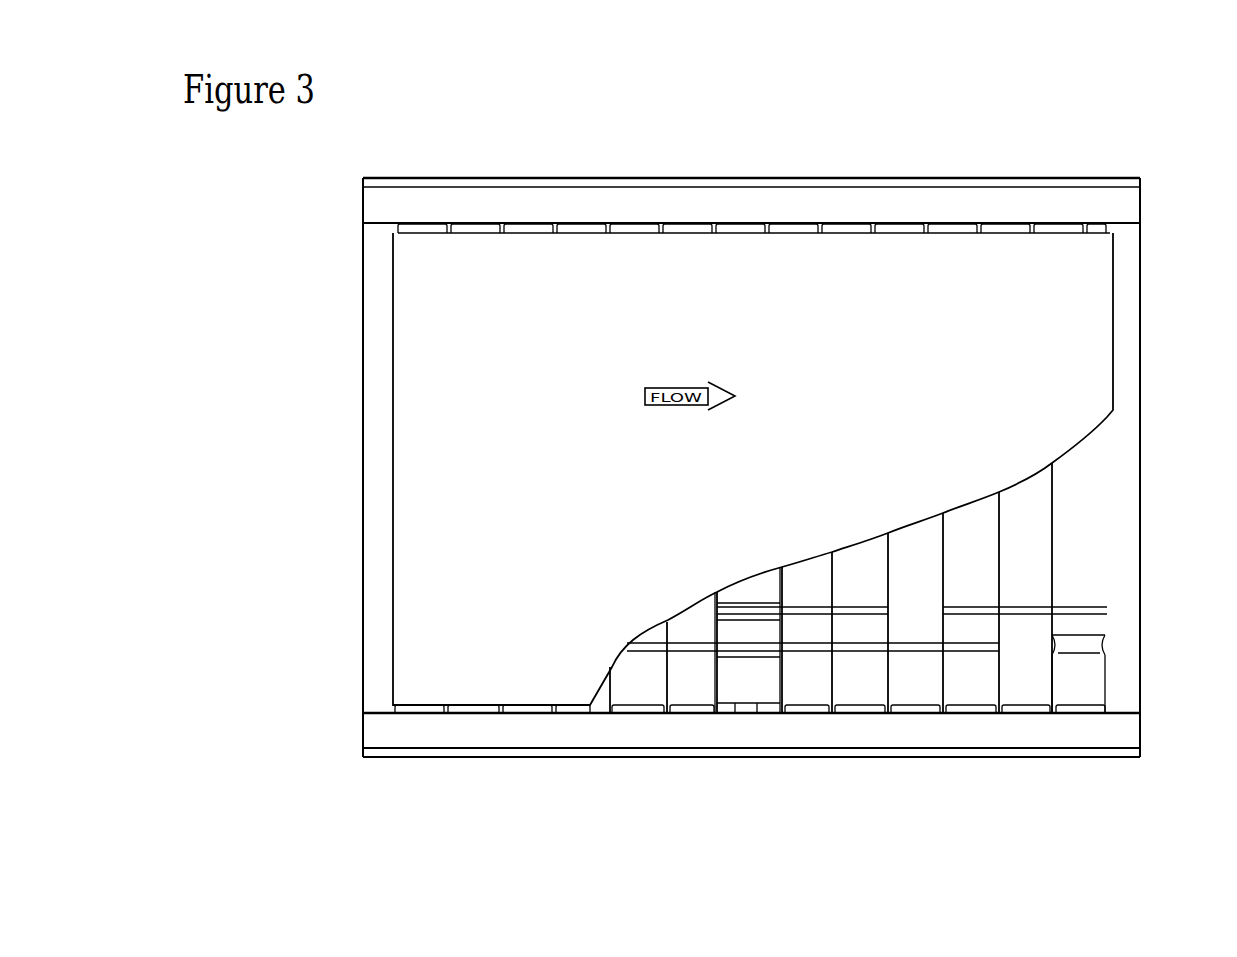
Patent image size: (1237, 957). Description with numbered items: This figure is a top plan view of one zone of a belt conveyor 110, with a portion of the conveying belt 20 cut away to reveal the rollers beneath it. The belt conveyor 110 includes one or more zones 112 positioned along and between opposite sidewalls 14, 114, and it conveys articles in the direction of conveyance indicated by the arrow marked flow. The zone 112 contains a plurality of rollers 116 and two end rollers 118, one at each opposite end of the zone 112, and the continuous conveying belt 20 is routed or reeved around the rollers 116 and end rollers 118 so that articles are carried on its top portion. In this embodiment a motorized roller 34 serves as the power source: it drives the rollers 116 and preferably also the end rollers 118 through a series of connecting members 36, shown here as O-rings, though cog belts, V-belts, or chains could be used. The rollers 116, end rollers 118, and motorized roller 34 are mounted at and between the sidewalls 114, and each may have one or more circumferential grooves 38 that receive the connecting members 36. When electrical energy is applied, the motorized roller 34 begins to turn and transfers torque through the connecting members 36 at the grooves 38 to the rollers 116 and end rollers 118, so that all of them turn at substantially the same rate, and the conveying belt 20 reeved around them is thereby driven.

The belt conveyor 110 is at (1133, 79).
The sidewall 14 is at (1121, 178).
The conveying belt 20 is at (415, 540).
The end roller 118 is at (392, 708).
The connecting member 36 is at (912, 643).
The circumferential groove 38 is at (1105, 640).
The motorized roller 34 is at (770, 665).
The roller 116 is at (637, 693).
The sidewall 114 is at (1078, 735).
The zone 112 is at (701, 858).